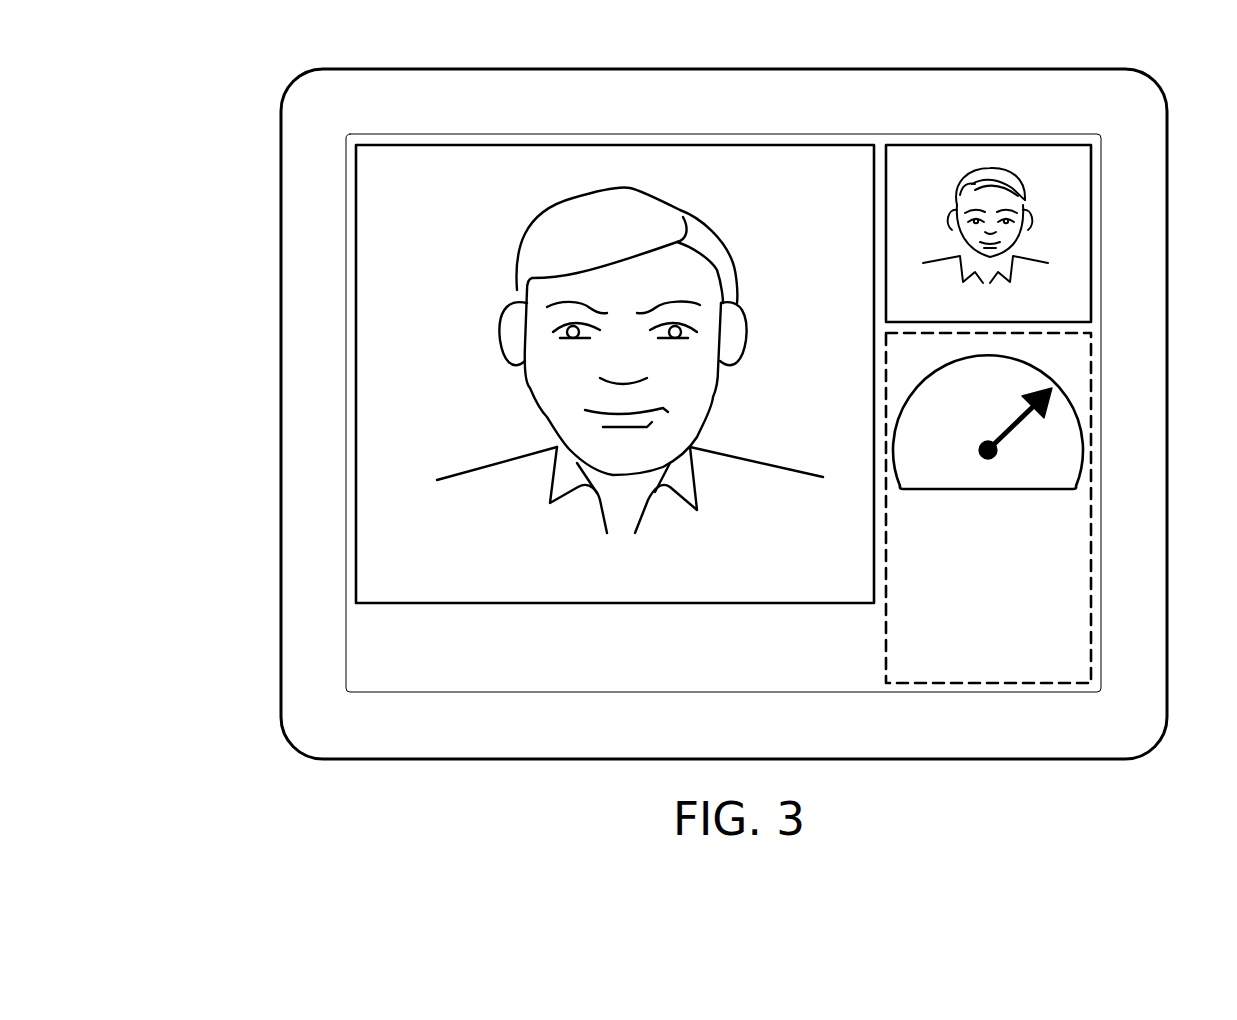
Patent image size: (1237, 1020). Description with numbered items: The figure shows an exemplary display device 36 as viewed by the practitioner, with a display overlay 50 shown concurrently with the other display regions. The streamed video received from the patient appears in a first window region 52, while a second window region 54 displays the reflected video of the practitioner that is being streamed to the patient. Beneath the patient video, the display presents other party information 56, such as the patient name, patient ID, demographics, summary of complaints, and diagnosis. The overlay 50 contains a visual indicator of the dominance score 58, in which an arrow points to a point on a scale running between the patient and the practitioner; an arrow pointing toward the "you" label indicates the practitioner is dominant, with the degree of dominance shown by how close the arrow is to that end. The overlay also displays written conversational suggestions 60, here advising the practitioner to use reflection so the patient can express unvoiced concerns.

The display device 36 is at (281, 413).
The display overlay 50 is at (1091, 508).
The first window region 52 is at (356, 233).
The second window region 54 is at (1101, 233).
The other party information 56 is at (370, 646).
The visual indicator of the dominance score 58 is at (1057, 382).
The conversational suggestions 60 is at (1073, 572).